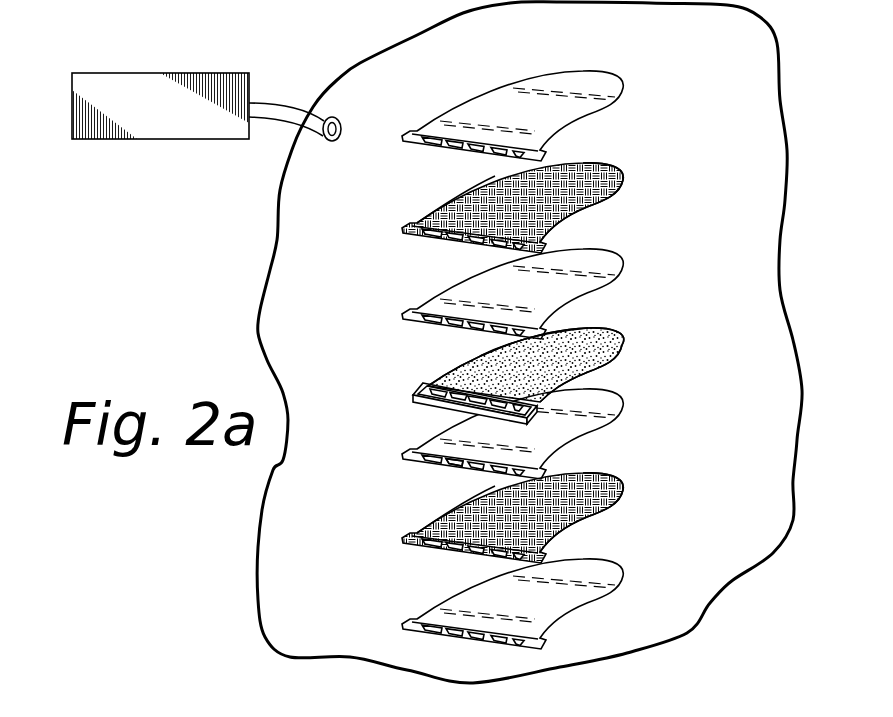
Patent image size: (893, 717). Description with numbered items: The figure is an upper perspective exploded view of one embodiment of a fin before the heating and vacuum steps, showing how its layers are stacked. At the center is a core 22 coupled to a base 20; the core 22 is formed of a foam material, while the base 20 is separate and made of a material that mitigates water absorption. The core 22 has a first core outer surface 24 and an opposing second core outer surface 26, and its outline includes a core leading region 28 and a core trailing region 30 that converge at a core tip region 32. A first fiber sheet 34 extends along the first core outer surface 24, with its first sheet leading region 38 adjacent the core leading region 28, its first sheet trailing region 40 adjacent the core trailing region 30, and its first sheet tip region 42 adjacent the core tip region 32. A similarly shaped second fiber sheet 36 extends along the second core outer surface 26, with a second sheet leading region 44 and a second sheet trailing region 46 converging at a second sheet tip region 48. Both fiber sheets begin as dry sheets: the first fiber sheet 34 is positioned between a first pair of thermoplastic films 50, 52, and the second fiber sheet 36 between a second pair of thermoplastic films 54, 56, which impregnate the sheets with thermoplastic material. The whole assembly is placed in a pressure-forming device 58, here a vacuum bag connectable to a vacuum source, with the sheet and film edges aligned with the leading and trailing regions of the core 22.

The base 20 is at (403, 402).
The core 22 is at (617, 325).
The first core outer surface 24 is at (468, 373).
The second core outer surface 26 is at (592, 354).
The core leading region 28 is at (497, 356).
The core trailing region 30 is at (540, 399).
The core tip region 32 is at (617, 341).
The first fiber sheet 34 is at (617, 154).
The second fiber sheet 36 is at (626, 467).
The first sheet leading region 38 is at (500, 183).
The first sheet trailing region 40 is at (556, 207).
The first sheet tip region 42 is at (617, 166).
The second sheet leading region 44 is at (470, 513).
The second sheet trailing region 46 is at (570, 517).
The second sheet tip region 48 is at (620, 481).
The thermoplastic film 50 is at (624, 243).
The thermoplastic film 52 is at (613, 68).
The thermoplastic film 54 is at (466, 631).
The thermoplastic film 56 is at (442, 457).
The pressure-forming device 58 is at (270, 248).